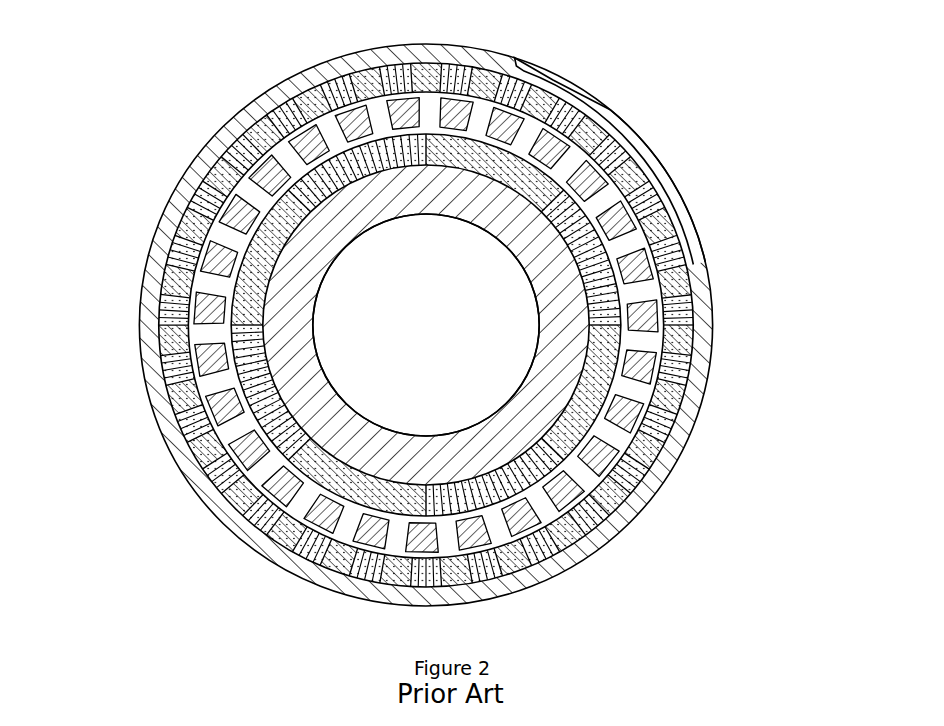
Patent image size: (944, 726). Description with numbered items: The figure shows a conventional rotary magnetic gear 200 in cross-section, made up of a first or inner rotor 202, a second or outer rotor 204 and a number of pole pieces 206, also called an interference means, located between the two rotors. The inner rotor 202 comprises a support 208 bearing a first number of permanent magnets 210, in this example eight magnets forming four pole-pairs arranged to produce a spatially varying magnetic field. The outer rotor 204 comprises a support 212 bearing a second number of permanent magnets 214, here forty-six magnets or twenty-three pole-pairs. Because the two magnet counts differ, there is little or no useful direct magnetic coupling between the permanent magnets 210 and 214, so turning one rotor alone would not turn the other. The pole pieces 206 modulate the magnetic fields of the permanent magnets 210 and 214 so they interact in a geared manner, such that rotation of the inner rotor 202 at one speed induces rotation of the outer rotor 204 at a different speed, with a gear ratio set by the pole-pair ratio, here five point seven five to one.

The rotary magnetic gear 200 is at (636, 522).
The first or inner rotor 202 is at (316, 323).
The second or outer rotor 204 is at (588, 92).
The pole pieces 206 is at (640, 273).
The support 208 is at (427, 213).
The permanent magnets 210 is at (556, 239).
The support 212 is at (652, 158).
The permanent magnets 214 is at (495, 72).